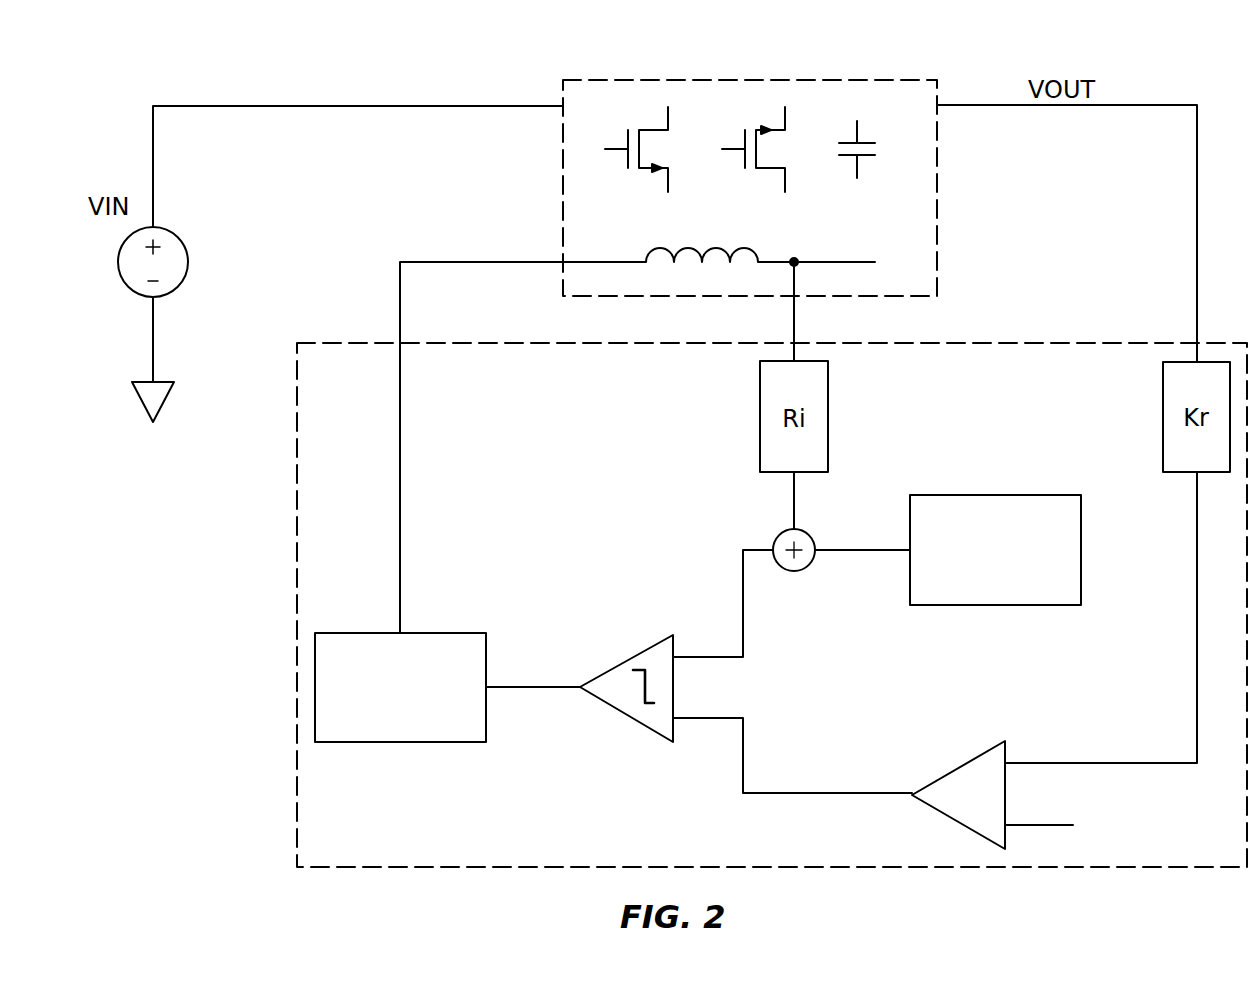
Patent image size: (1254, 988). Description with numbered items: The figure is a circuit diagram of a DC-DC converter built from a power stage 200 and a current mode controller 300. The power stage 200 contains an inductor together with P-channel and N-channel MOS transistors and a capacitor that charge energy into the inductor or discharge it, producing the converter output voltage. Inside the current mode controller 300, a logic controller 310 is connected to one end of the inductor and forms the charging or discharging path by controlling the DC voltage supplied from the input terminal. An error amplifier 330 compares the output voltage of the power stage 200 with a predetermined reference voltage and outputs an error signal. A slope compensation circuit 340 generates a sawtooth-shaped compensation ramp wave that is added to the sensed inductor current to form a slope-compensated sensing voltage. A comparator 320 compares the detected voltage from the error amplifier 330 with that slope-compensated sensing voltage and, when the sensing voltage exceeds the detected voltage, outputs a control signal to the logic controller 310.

The power stage 200 is at (903, 80).
The current mode controller 300 is at (327, 341).
The logic controller 310 is at (460, 632).
The comparator 320 is at (640, 650).
The error amplifier 330 is at (972, 757).
The slope compensation circuit 340 is at (1052, 482).